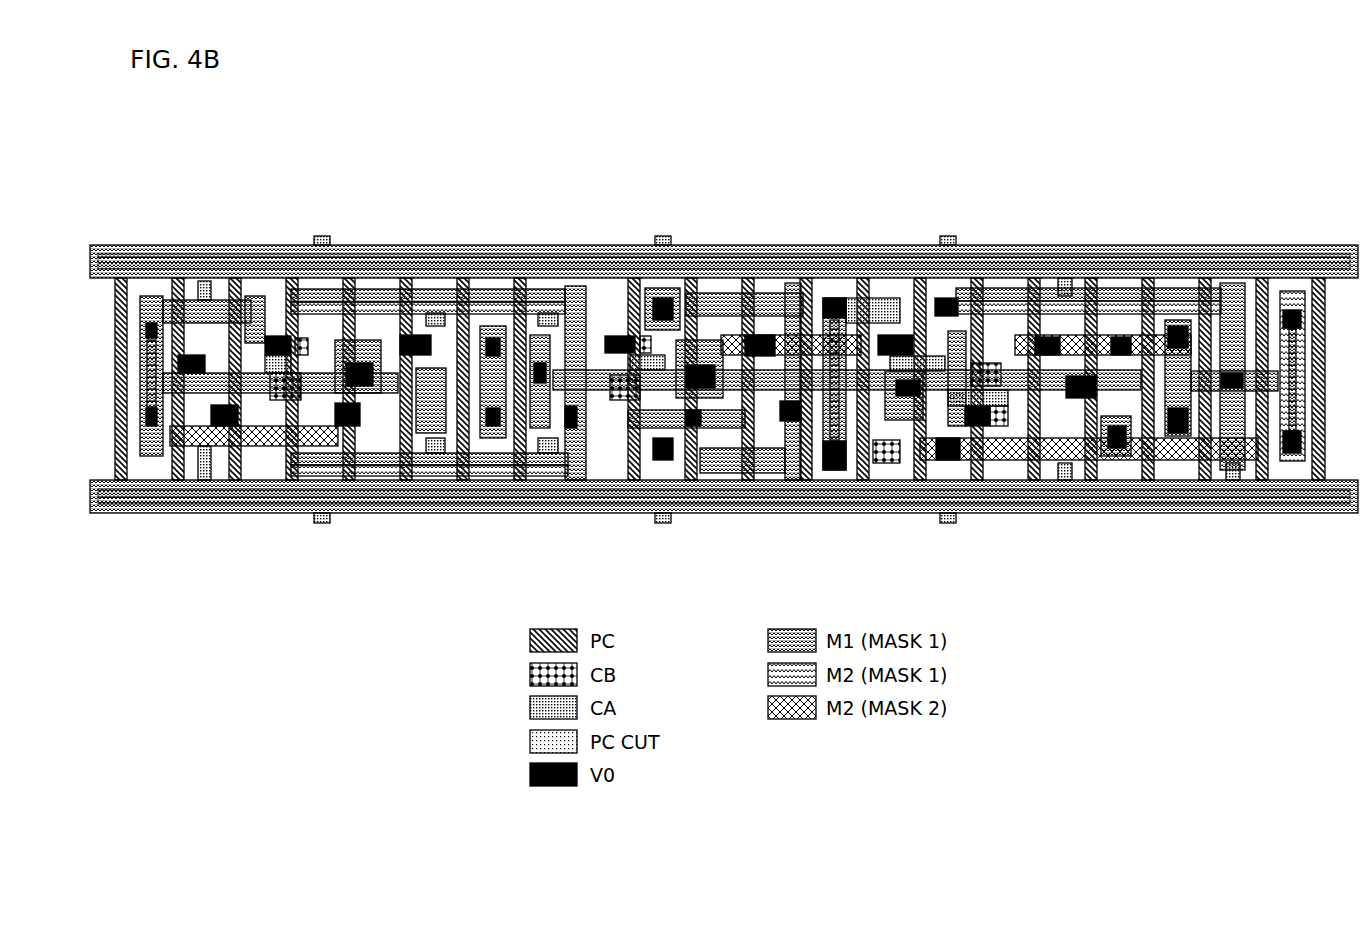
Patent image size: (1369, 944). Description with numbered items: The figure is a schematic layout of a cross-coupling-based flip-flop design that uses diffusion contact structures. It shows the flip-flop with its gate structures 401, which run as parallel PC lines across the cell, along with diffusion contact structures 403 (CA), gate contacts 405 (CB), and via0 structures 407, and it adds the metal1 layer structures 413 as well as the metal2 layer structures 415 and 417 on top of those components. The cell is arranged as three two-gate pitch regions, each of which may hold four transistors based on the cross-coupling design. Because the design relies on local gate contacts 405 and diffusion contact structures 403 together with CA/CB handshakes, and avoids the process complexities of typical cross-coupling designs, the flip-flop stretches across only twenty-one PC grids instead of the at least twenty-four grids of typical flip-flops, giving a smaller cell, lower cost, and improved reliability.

The gate structure 401 is at (1322, 412).
The diffusion contact structure 403 is at (314, 516).
The gate contact 405 is at (840, 456).
The via0 structure 407 is at (1295, 312).
The metal1 layer structure 413 is at (88, 505).
The metal2 layer structure 415 is at (588, 384).
The metal2 layer structure 417 is at (1002, 456).